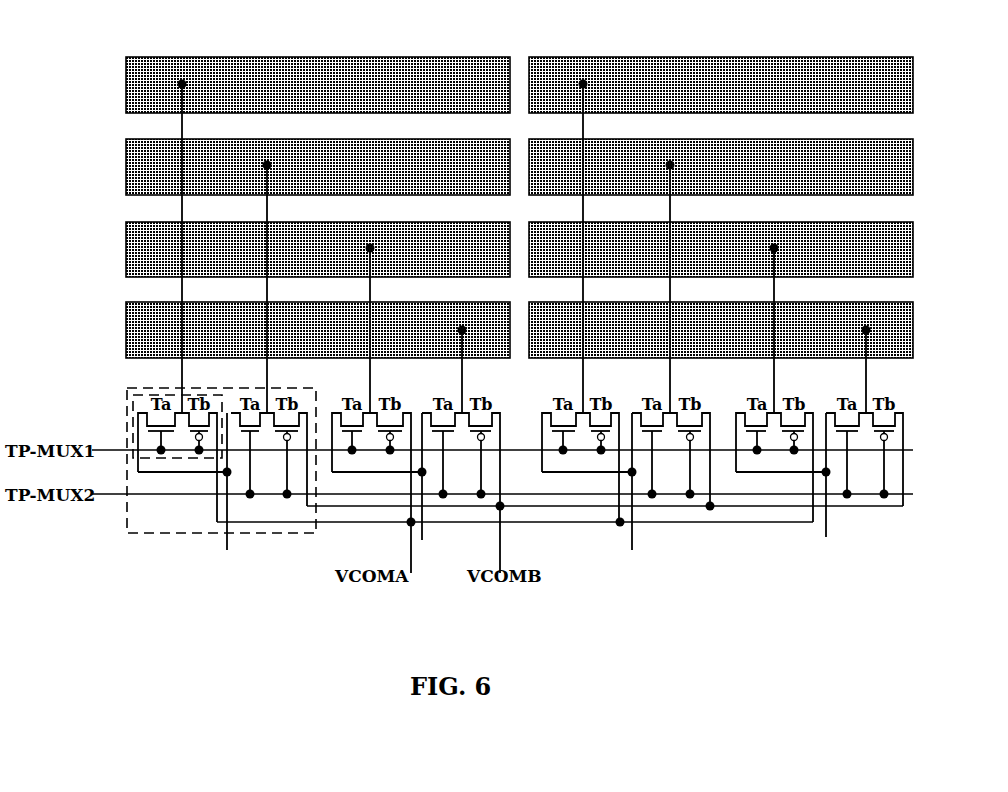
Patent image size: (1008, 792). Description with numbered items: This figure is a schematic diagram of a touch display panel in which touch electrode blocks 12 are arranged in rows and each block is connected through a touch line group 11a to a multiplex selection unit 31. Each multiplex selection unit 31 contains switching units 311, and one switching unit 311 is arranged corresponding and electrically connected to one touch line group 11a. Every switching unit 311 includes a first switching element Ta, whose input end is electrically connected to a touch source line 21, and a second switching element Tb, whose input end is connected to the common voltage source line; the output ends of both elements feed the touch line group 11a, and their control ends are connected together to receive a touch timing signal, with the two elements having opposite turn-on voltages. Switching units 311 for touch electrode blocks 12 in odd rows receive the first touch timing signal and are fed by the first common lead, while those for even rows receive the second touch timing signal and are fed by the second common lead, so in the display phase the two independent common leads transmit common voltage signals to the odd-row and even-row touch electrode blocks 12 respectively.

The touch electrode block 12 is at (126, 84).
The touch line group 11a is at (182, 205).
The multiplex selection unit 31 is at (128, 388).
The switching unit 311 is at (134, 425).
The touch source line 21 is at (228, 550).